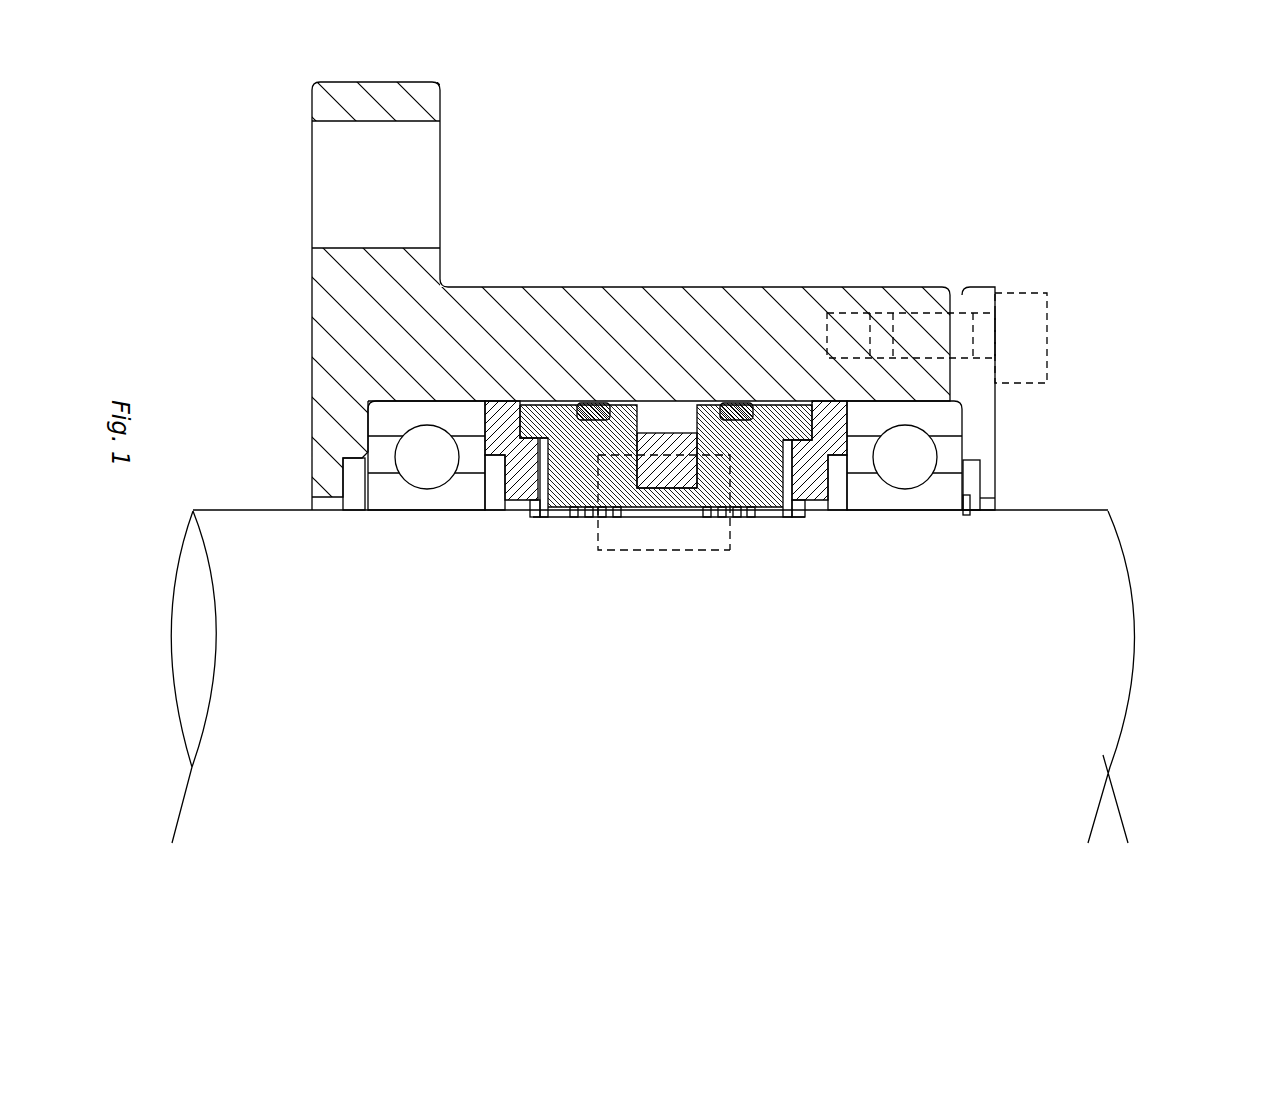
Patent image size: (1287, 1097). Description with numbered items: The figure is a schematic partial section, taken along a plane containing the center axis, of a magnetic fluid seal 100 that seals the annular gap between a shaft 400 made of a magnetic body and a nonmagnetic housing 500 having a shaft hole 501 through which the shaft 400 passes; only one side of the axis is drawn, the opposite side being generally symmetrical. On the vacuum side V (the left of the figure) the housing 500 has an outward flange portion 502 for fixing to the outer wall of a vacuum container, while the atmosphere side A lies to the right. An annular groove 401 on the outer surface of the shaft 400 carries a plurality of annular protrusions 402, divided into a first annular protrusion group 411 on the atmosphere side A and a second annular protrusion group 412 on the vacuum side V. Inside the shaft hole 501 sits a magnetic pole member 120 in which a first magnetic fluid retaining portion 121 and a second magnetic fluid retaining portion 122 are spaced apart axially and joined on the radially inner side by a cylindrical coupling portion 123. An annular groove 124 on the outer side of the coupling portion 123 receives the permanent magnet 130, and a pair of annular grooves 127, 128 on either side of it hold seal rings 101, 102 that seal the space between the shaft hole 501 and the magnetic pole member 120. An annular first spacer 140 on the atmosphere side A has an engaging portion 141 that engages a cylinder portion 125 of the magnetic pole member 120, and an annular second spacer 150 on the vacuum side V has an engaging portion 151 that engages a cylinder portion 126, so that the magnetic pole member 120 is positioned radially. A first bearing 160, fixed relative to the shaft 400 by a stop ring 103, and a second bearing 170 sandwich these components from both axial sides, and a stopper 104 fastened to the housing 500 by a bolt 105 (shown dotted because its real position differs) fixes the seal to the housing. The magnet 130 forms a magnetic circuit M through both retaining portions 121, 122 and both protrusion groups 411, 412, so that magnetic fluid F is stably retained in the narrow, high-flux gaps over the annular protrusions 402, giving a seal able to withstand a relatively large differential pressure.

The magnetic fluid seal 100 is at (1117, 391).
The seal ring 101 is at (748, 402).
The seal ring 102 is at (600, 402).
The stop ring 103 is at (965, 516).
The stopper 104 is at (995, 440).
The bolt 105 is at (1035, 293).
The magnetic pole member 120 is at (682, 522).
The first magnetic fluid retaining portion 121 is at (768, 517).
The second magnetic fluid retaining portion 122 is at (558, 519).
The coupling portion 123 is at (670, 514).
The annular groove 124 is at (738, 408).
The cylinder portion 125 is at (812, 404).
The cylinder portion 126 is at (540, 436).
The annular groove 127 is at (788, 440).
The annular groove 128 is at (580, 406).
The permanent magnet 130 is at (668, 433).
The first spacer 140 is at (836, 500).
The engaging portion 141 is at (807, 518).
The second spacer 150 is at (496, 495).
The engaging portion 151 is at (533, 519).
The first bearing 160 is at (943, 498).
The second bearing 170 is at (400, 495).
The shaft 400 is at (1125, 635).
The annular groove 401 is at (785, 520).
The annular protrusions 402 is at (611, 519).
The first annular protrusion group 411 is at (738, 553).
The second annular protrusion group 412 is at (588, 552).
The housing 500 is at (300, 104).
The shaft hole 501 is at (645, 420).
The outward flange portion 502 is at (442, 97).
The magnetic circuit M is at (675, 518).
The magnetic fluid F is at (708, 520).
The vacuum side V is at (274, 492).
The atmosphere side A is at (1024, 492).